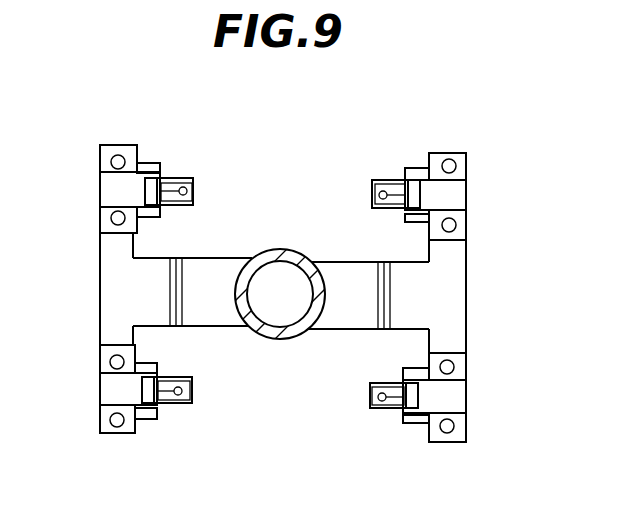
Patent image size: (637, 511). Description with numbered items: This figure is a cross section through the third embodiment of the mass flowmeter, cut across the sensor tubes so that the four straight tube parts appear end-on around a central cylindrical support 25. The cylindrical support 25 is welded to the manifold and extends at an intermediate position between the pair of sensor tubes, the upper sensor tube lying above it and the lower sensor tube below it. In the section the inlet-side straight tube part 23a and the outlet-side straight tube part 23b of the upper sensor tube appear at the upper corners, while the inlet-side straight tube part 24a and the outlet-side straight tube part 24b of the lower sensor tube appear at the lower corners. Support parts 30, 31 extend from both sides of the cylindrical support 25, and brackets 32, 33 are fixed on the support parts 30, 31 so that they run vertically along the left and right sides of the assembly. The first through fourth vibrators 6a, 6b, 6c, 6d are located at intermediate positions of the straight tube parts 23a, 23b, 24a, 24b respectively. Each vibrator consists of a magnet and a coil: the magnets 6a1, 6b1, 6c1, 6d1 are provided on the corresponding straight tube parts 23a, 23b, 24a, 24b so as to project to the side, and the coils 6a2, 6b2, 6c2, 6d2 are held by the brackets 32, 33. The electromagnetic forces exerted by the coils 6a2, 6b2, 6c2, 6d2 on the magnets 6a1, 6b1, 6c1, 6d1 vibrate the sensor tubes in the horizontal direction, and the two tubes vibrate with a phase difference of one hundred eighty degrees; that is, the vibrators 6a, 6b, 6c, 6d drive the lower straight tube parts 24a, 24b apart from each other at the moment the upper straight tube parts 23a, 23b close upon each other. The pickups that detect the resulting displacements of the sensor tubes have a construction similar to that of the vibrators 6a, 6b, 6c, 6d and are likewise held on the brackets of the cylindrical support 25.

The first vibrator 6a is at (193, 149).
The magnet 6a1 is at (160, 188).
The coil 6a2 is at (148, 164).
The second vibrator 6b is at (423, 159).
The magnet 6b1 is at (420, 193).
The coil 6b2 is at (413, 169).
The third vibrator 6c is at (192, 424).
The magnet 6c1 is at (160, 400).
The coil 6c2 is at (143, 420).
The fourth vibrator 6d is at (389, 432).
The magnet 6d1 is at (407, 400).
The coil 6d2 is at (417, 423).
The straight tube part 23a is at (221, 170).
The straight tube part 23b is at (372, 192).
The straight tube part 24a is at (190, 392).
The straight tube part 24b is at (370, 393).
The cylindrical support 25 is at (280, 249).
The support part 30 is at (222, 315).
The support part 31 is at (347, 315).
The bracket 32 is at (108, 300).
The bracket 33 is at (453, 312).